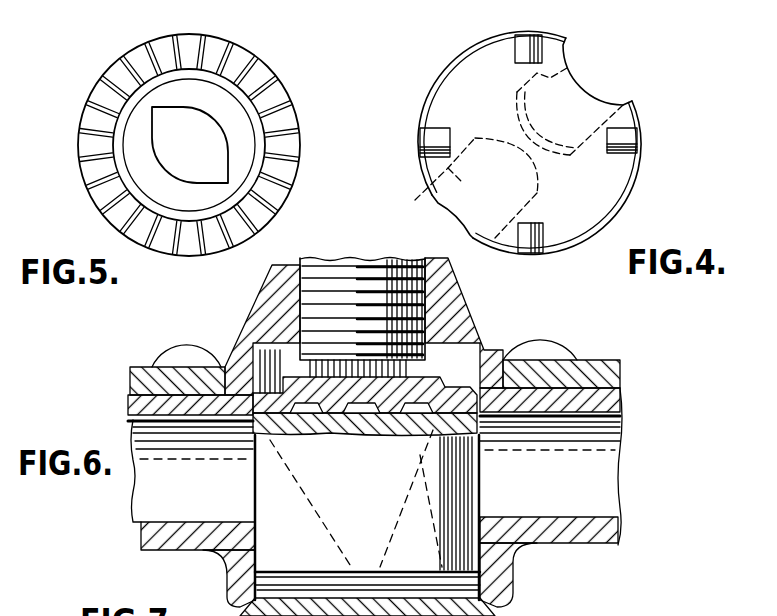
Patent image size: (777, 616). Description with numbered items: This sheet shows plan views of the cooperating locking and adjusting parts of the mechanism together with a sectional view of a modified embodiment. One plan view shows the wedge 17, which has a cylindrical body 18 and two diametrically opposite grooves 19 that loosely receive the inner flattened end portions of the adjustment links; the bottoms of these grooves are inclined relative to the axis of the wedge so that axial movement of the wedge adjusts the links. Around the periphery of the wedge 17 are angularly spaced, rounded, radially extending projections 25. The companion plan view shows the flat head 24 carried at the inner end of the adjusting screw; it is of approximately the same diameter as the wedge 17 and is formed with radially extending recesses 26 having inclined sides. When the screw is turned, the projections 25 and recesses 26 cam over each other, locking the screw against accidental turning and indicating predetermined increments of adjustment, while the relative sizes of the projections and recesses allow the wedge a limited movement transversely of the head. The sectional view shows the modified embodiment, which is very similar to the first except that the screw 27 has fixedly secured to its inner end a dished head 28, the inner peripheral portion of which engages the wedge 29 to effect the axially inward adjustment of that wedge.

In FIG. 4, the wedge 17 is at (450, 65).
In FIG. 4, the cylindrical body 18 is at (595, 193).
In FIG. 4, the grooves 19 is at (588, 52).
In FIG. 5, the flat head 24 is at (293, 170).
In FIG. 4, the projections 25 is at (528, 50).
In FIG. 5, the recesses 26 is at (185, 243).
In FIG. 6, the screw 27 is at (323, 297).
In FIG. 6, the dished head 28 is at (452, 397).
In FIG. 6, the wedge 29 is at (477, 427).